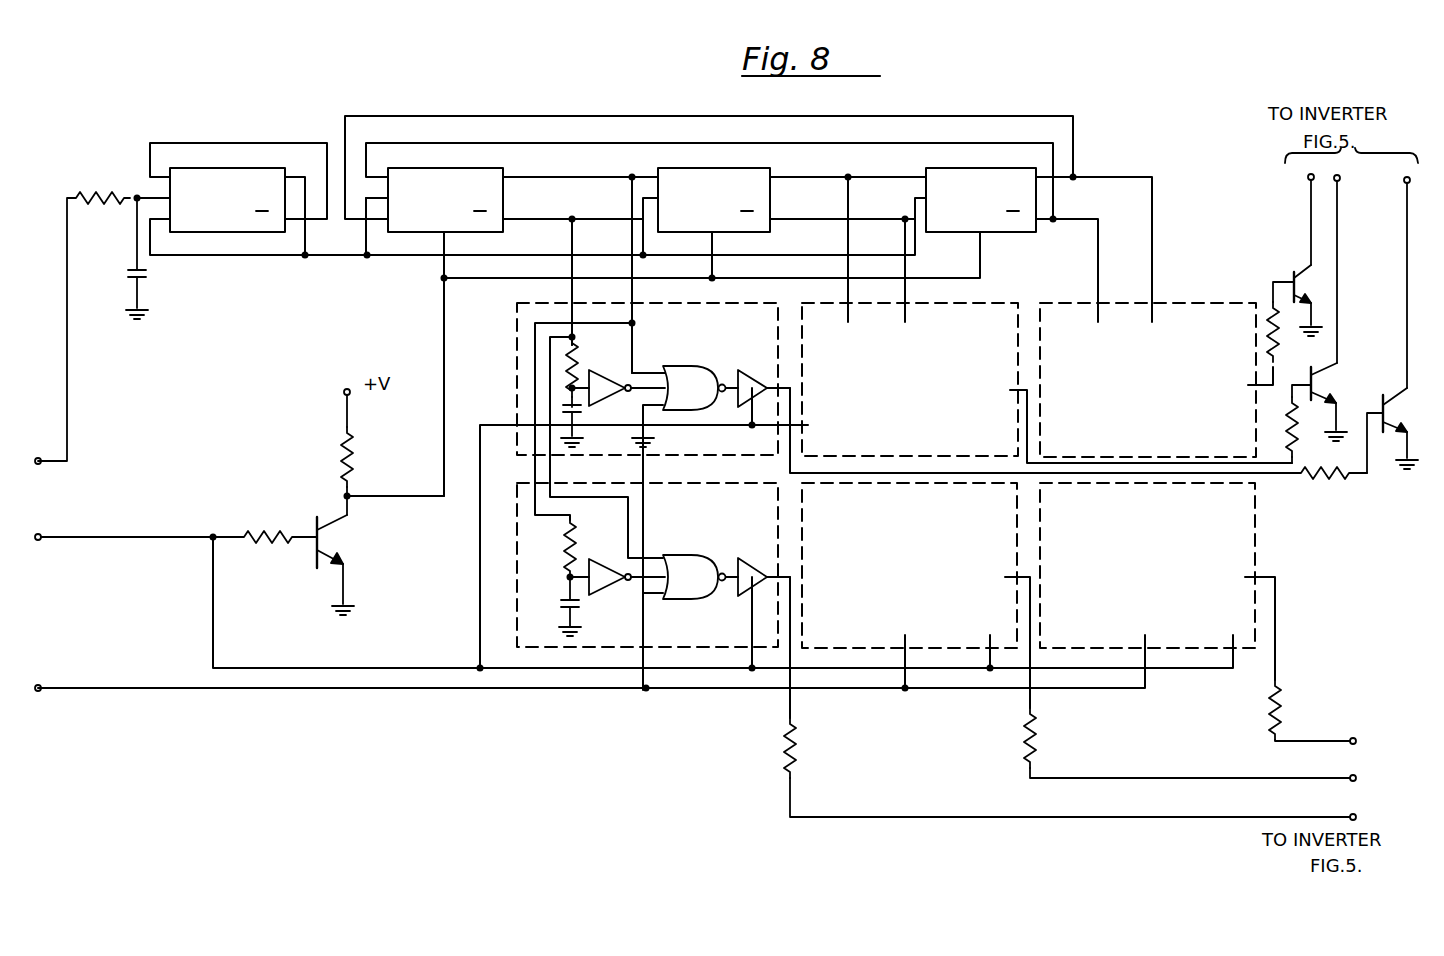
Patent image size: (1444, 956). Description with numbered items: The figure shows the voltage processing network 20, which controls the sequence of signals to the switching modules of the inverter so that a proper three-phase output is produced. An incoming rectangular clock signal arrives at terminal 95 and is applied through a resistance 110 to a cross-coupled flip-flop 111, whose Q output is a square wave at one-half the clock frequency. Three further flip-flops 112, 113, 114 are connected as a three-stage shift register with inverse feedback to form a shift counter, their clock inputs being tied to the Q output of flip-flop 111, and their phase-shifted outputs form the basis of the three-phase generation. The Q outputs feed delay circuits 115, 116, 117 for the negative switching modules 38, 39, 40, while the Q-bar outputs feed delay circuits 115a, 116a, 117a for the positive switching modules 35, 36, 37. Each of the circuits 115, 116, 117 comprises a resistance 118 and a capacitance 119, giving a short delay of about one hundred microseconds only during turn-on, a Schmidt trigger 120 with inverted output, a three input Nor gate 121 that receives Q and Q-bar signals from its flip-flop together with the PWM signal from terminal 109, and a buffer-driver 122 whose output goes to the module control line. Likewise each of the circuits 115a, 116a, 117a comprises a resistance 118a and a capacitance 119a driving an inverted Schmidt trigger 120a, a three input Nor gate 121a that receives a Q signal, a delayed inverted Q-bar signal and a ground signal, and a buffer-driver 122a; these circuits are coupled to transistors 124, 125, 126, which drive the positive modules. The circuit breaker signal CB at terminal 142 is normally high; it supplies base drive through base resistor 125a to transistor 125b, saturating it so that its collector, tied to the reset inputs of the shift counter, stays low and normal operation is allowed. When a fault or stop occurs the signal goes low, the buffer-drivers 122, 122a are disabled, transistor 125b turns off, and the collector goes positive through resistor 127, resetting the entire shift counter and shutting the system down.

The voltage processing network 20 is at (1162, 152).
The positive switching module 35 is at (1308, 205).
The positive switching module 36 is at (1339, 225).
The positive switching module 37 is at (1405, 226).
The negative switching module 38 is at (1350, 815).
The negative switching module 39 is at (1350, 776).
The negative switching module 40 is at (1350, 739).
The terminal 95 is at (42, 465).
The terminal 109 is at (42, 684).
The resistance 110 is at (95, 195).
The flip-flop 111 is at (243, 168).
The flip-flop 112 is at (437, 172).
The flip-flop 113 is at (718, 170).
The flip-flop 114 is at (975, 170).
The delay circuit 115 is at (688, 485).
The delay circuit 115a is at (720, 303).
The delay circuit 116 is at (1015, 503).
The delay circuit 116a is at (962, 305).
The delay circuit 117 is at (1252, 545).
The delay circuit 117a is at (1185, 305).
The resistance 118 is at (563, 540).
The resistance 118a is at (578, 355).
The capacitance 119 is at (580, 606).
The capacitance 119a is at (582, 412).
The Schmidt trigger 120 is at (600, 565).
The inverted Schmidt trigger 120a is at (612, 366).
The three input Nor gate 121 is at (690, 565).
The three input Nor gate 121a is at (682, 372).
The buffer-driver 122 is at (752, 562).
The buffer-driver 122a is at (757, 362).
The transistor 124 is at (1298, 268).
The transistor 125 is at (1320, 383).
The base resistor 125a is at (275, 518).
The transistor 125b is at (330, 540).
The transistor 126 is at (1390, 437).
The resistor 127 is at (356, 470).
The terminal 142 is at (42, 542).